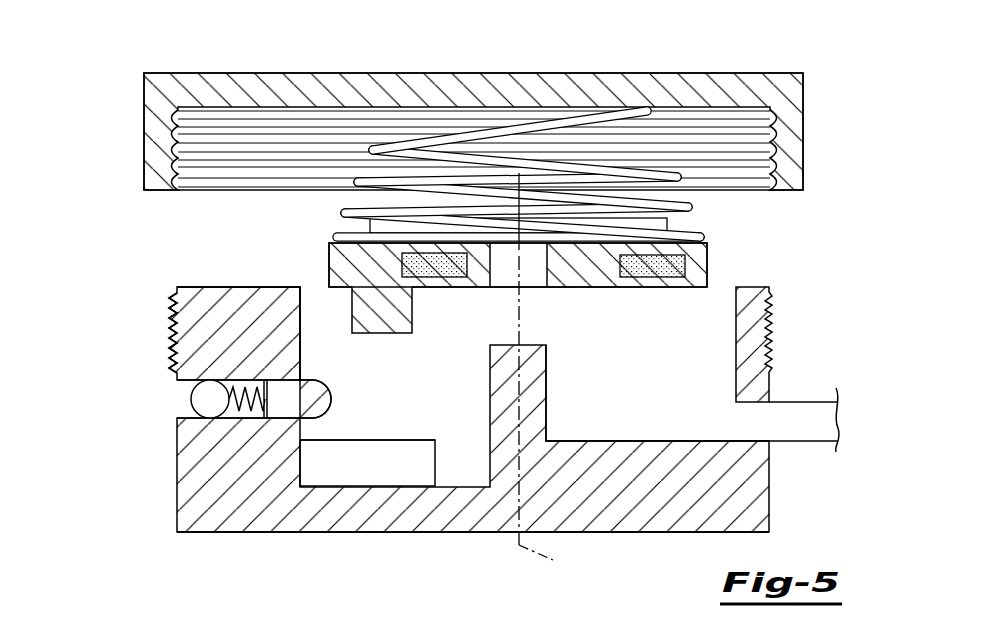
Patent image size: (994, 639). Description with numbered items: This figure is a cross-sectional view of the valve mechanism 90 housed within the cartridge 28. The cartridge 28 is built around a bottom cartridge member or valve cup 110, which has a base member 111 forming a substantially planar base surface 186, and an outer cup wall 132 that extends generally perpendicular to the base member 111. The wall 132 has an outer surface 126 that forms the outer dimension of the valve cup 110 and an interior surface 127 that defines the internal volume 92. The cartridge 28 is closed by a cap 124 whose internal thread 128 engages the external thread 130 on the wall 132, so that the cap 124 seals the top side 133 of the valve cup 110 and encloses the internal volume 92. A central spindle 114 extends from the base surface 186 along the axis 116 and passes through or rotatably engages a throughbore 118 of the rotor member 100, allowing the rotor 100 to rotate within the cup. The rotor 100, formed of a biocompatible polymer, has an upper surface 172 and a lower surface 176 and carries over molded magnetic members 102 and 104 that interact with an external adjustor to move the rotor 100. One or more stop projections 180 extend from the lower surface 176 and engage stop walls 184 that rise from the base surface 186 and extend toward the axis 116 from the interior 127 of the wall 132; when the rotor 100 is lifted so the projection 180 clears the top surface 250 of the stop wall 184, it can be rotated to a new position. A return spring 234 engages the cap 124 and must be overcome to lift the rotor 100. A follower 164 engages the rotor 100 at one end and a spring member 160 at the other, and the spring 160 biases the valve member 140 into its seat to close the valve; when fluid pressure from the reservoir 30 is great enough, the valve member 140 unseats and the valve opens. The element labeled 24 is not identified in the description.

The cap 124 is at (699, 72).
The return spring 234 is at (373, 150).
The cartridge 28 is at (831, 150).
The upper surface 172 is at (665, 243).
The valve mechanism 90 is at (792, 251).
The outer cup wall 132 is at (210, 272).
The top side 133 is at (265, 287).
The rotor member 100 is at (345, 230).
The internal thread 128 is at (188, 188).
The outer surface 126 is at (180, 292).
The external thread 130 is at (175, 345).
The valve member 140 is at (205, 398).
The reservoir 30 is at (134, 459).
The interior surface 127 is at (301, 300).
The stop wall 184 is at (373, 426).
The valve cup 110 is at (490, 332).
The magnetic member 102 is at (438, 266).
The stop projection 180 is at (404, 332).
The throughbore 118 is at (547, 256).
The magnetic member 104 is at (635, 270).
The lower surface 176 is at (677, 290).
The central spindle 114 is at (547, 423).
The housing wall 24 is at (822, 402).
The follower 164 is at (298, 403).
The spring member 160 is at (240, 413).
The base member 111 is at (322, 515).
The base surface 186 is at (363, 485).
The axis 116 is at (553, 560).
The top surface 250 is at (666, 441).
The internal volume 92 is at (726, 386).